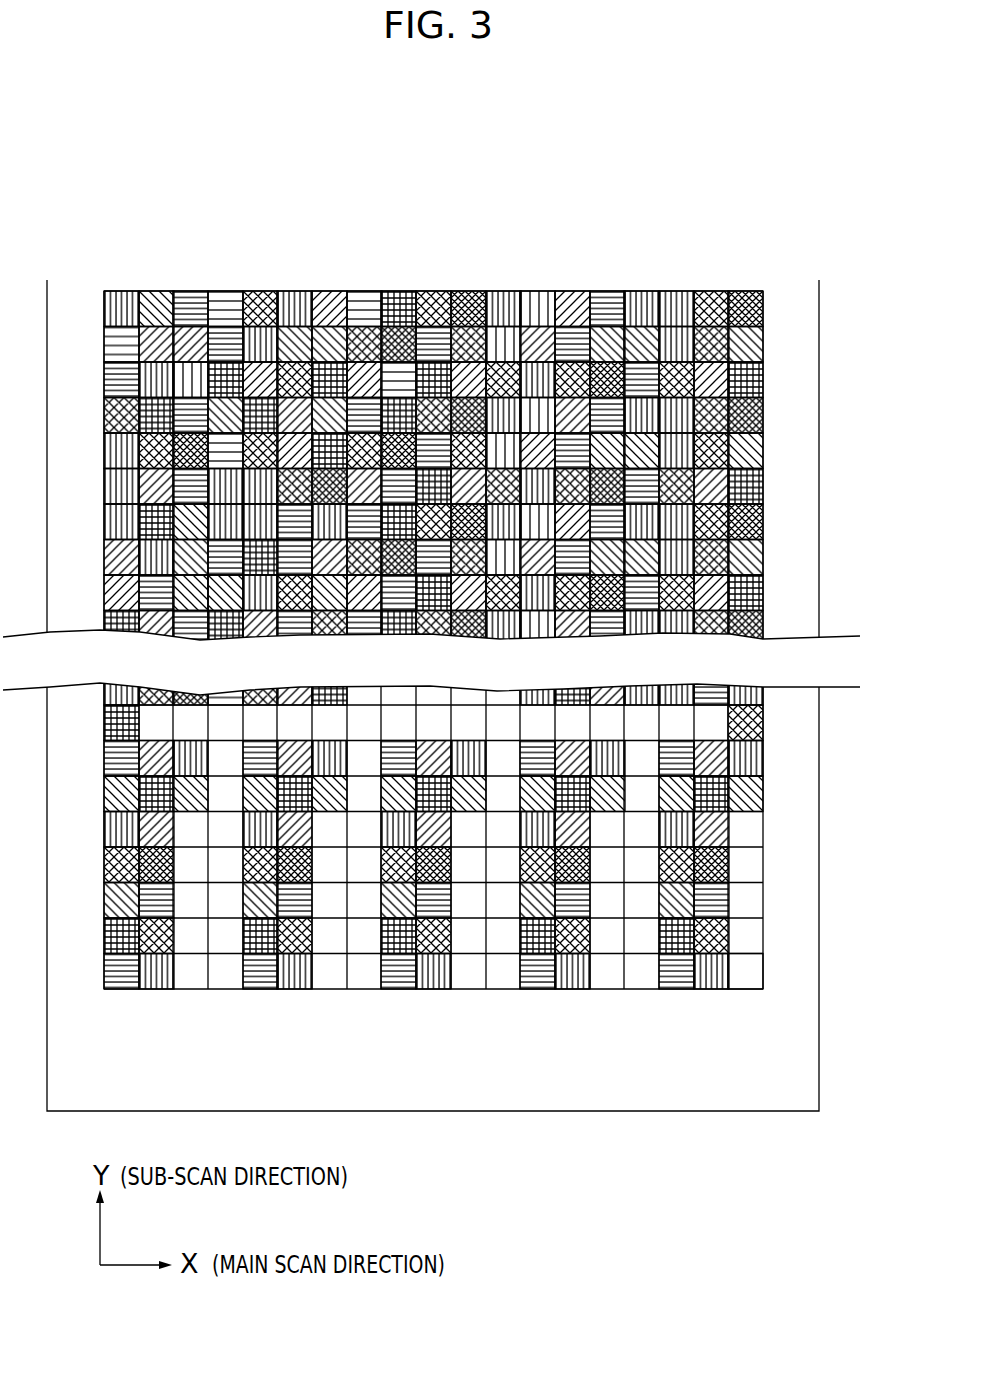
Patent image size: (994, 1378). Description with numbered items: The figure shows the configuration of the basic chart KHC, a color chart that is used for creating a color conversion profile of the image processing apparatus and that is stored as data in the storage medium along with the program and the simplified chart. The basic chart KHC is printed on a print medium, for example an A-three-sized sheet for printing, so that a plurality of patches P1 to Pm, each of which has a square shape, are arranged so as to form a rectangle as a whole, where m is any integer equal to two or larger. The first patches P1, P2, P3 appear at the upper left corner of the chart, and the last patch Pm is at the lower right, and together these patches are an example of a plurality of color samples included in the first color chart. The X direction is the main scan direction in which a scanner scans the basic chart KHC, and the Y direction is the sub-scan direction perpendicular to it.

The patch P1 is at (118, 220).
The patch P2 is at (167, 220).
The patch P3 is at (220, 220).
The basic chart KHC is at (719, 156).
The patch Pm is at (799, 972).